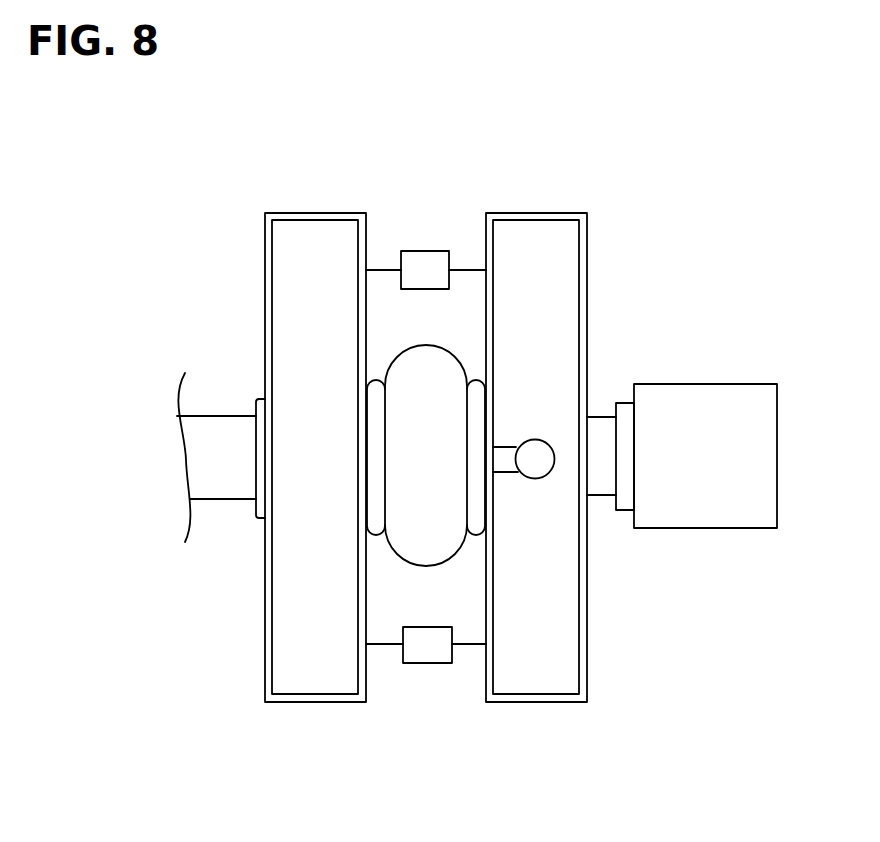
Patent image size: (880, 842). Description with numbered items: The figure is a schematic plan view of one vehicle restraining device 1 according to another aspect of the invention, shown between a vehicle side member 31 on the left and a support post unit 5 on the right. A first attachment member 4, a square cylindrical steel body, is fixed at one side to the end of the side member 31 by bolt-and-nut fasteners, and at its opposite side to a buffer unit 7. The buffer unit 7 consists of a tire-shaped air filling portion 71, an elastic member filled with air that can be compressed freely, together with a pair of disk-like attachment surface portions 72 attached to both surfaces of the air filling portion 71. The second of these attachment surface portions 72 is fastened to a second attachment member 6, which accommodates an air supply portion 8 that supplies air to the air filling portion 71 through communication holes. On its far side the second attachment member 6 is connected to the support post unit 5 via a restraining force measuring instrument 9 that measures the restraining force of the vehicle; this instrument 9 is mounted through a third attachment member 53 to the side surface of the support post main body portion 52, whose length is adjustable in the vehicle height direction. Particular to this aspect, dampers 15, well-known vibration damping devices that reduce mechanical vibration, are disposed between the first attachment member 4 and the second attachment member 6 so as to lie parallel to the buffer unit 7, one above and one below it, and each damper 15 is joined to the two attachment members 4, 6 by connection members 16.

The vehicle restraining device 1 is at (647, 173).
The first attachment member 4 is at (317, 212).
The support post unit 5 is at (789, 451).
The second attachment member 6 is at (533, 219).
The buffer unit 7 is at (388, 352).
The air supply portion 8 is at (537, 439).
The restraining force measuring instrument 9 is at (597, 416).
The damper 15 is at (428, 256).
The connection member 16 is at (382, 267).
The side member 31 is at (230, 415).
The support post main body portion 52 is at (705, 529).
The third attachment member 53 is at (624, 511).
The air filling portion 71 is at (435, 557).
The attachment surface portion 72 is at (380, 535).